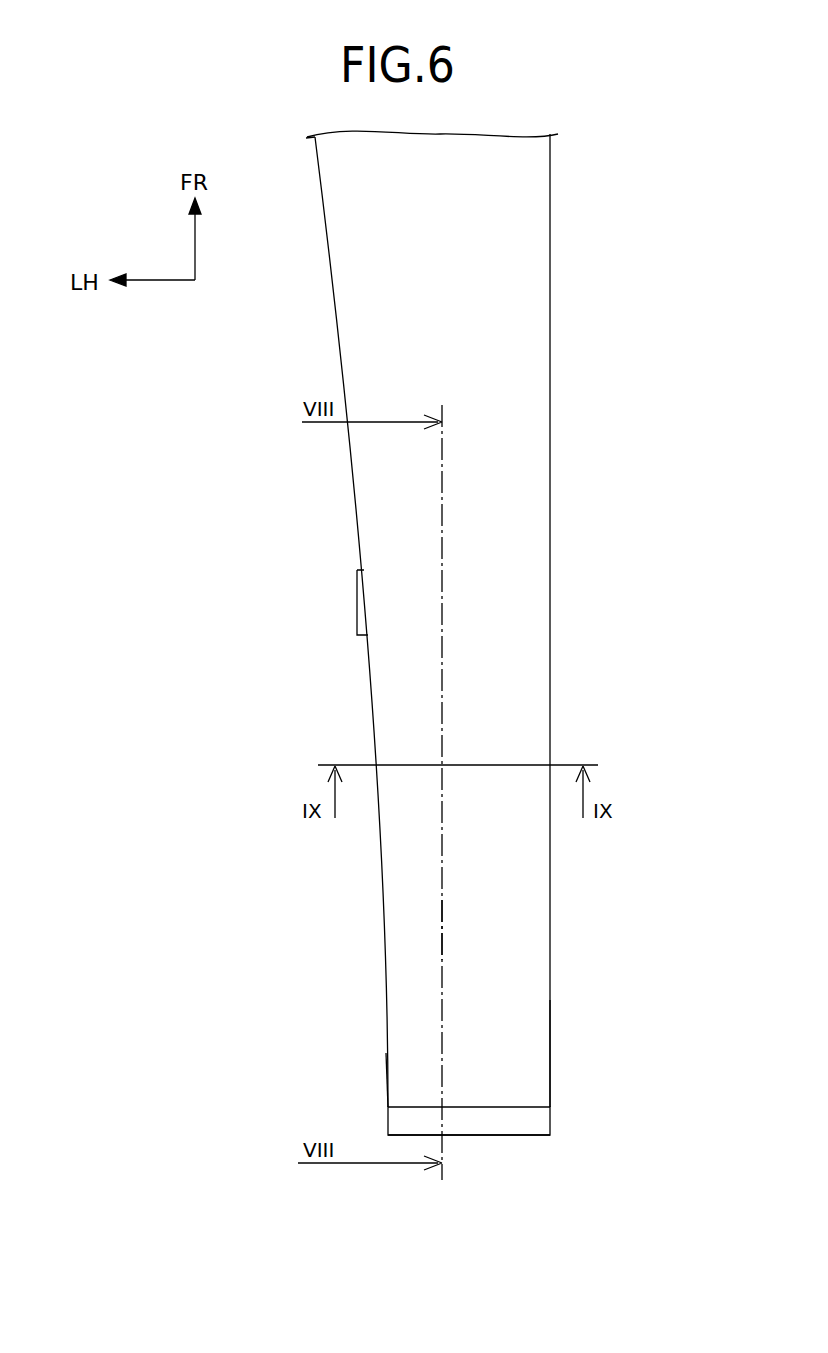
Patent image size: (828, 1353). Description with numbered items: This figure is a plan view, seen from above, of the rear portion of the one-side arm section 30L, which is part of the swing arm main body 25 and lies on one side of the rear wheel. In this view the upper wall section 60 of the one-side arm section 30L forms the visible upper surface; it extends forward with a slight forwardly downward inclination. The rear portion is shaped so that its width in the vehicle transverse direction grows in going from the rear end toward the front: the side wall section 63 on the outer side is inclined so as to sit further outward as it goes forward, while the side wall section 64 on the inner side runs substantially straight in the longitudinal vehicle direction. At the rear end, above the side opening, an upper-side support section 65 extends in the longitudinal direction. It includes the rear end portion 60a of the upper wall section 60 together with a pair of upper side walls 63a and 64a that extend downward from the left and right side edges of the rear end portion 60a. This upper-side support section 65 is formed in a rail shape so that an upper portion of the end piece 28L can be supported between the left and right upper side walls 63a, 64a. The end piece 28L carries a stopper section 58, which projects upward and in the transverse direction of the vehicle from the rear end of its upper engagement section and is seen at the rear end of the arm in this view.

The swing arm main body 25 is at (463, 683).
The one-side arm section 30L is at (556, 620).
The side wall section 64 is at (550, 375).
The upper wall section 60 is at (407, 295).
The side wall section 63 is at (342, 356).
The upper-side support section 65 is at (382, 933).
The upper side wall 63a is at (385, 1053).
The upper side wall 64a is at (550, 1052).
The rear end portion 60a is at (480, 933).
The stopper section 58 is at (550, 1120).
The end piece 28L is at (487, 1137).